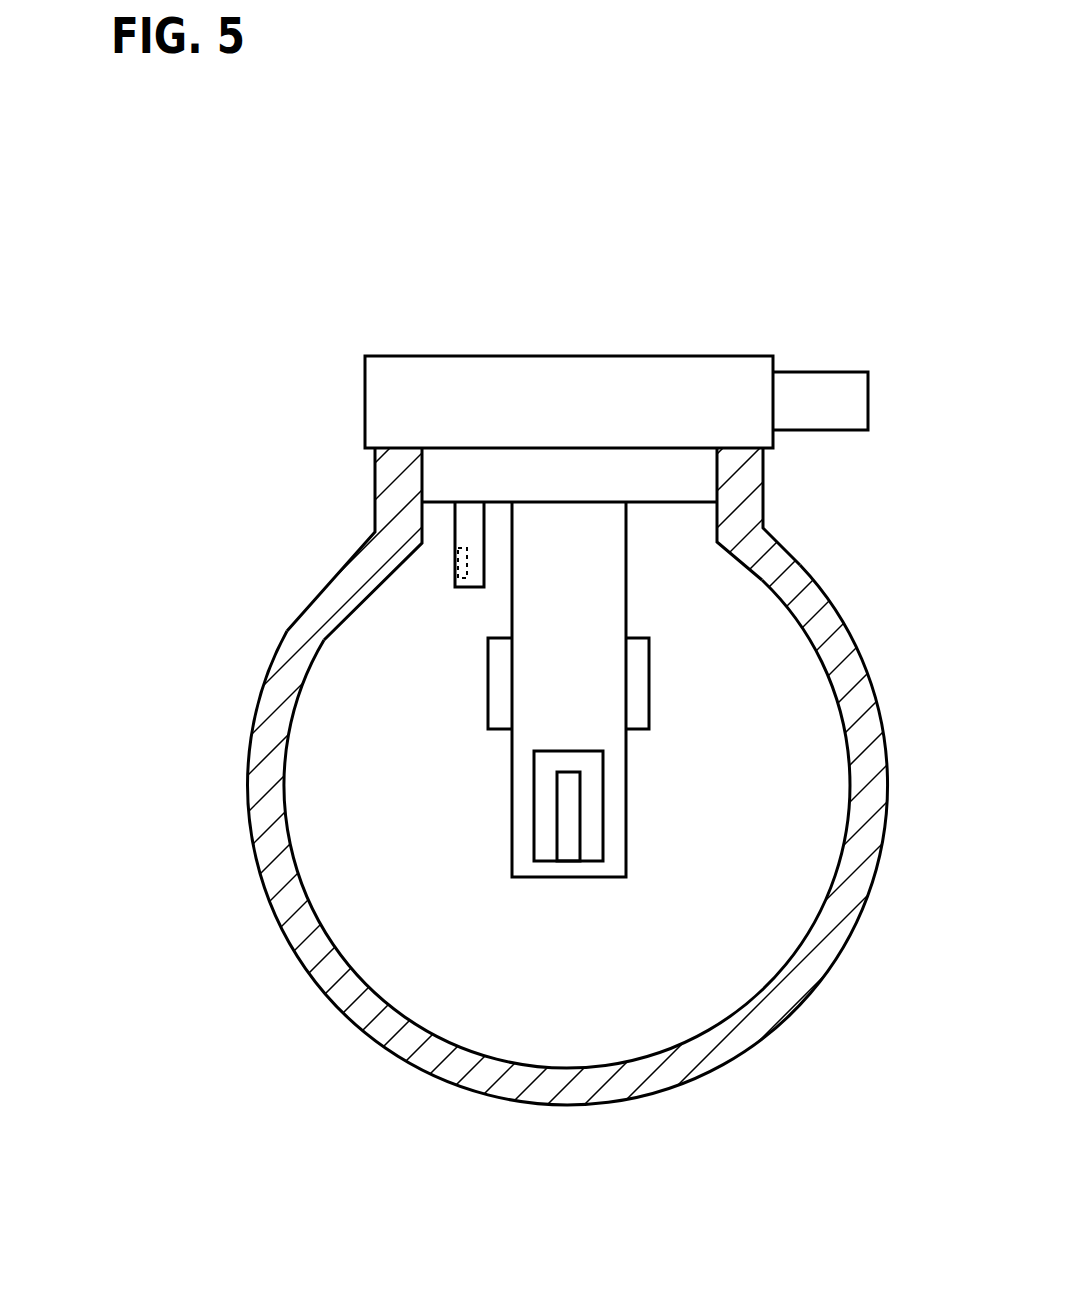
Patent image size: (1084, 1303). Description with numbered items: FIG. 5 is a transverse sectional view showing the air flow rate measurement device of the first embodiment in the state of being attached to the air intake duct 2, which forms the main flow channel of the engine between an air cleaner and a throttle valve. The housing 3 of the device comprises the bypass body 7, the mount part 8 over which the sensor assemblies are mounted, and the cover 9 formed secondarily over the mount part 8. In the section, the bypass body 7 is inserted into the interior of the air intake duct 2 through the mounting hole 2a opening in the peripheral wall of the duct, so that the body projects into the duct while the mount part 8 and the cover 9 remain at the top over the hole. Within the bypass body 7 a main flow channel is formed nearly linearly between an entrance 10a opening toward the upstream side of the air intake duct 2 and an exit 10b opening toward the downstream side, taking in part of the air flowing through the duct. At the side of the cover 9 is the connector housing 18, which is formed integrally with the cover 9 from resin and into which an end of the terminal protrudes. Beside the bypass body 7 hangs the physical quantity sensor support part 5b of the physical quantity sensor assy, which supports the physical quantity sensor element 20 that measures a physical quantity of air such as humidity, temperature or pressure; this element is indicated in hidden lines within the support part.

The air intake duct 2 is at (270, 718).
The mounting hole 2a is at (422, 484).
The housing 3 is at (582, 584).
The physical quantity sensor support part 5b is at (379, 520).
The bypass body 7 is at (644, 689).
The mount part 8 is at (695, 482).
The cover 9 is at (728, 420).
The entrance 10a is at (547, 811).
The exit 10b is at (572, 818).
The connector housing 18 is at (820, 380).
The physical quantity sensor element 20 is at (453, 563).